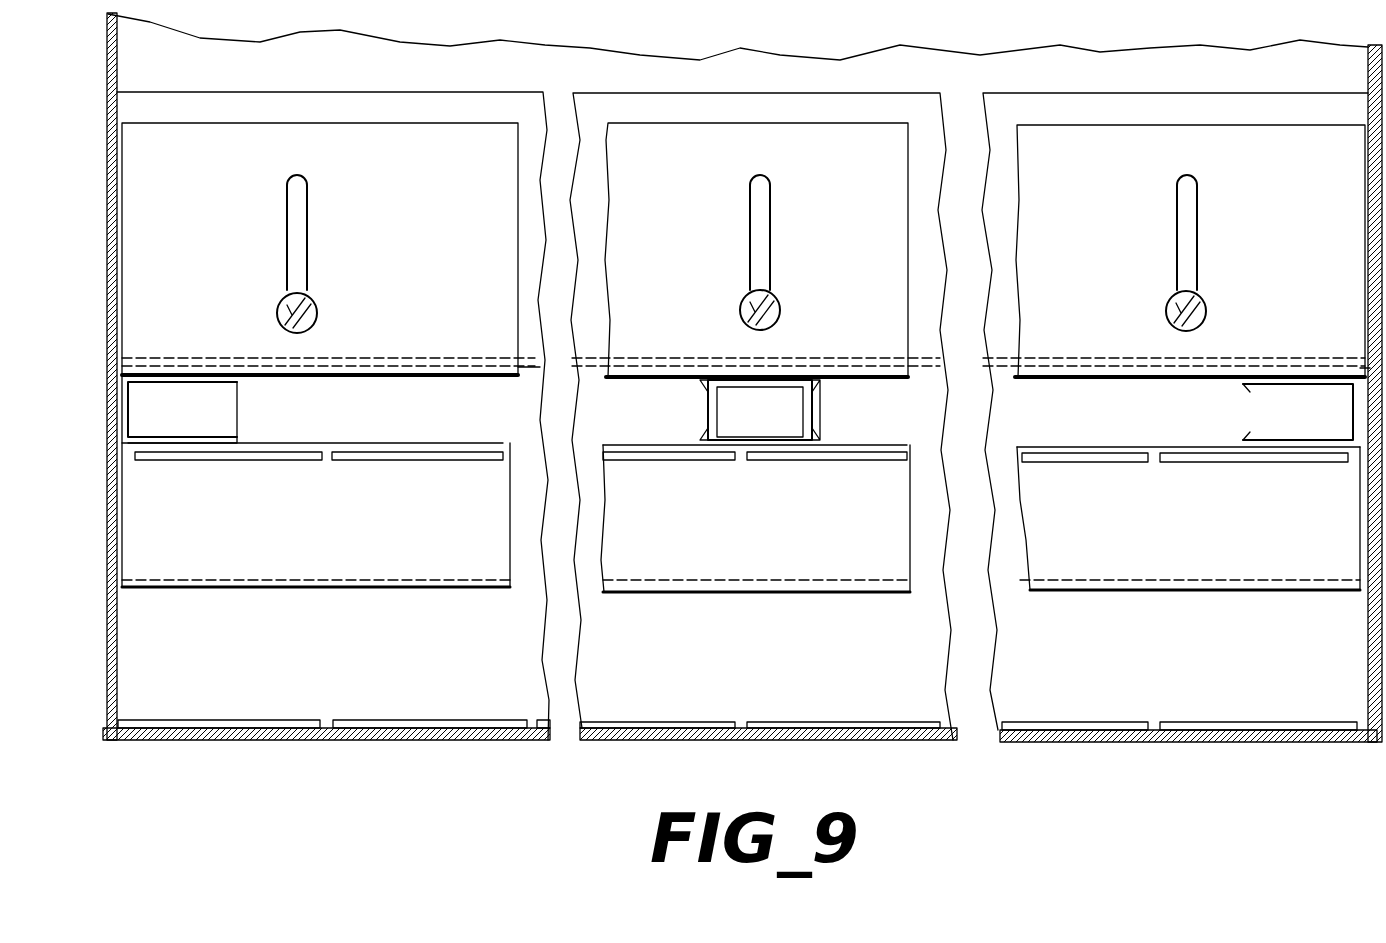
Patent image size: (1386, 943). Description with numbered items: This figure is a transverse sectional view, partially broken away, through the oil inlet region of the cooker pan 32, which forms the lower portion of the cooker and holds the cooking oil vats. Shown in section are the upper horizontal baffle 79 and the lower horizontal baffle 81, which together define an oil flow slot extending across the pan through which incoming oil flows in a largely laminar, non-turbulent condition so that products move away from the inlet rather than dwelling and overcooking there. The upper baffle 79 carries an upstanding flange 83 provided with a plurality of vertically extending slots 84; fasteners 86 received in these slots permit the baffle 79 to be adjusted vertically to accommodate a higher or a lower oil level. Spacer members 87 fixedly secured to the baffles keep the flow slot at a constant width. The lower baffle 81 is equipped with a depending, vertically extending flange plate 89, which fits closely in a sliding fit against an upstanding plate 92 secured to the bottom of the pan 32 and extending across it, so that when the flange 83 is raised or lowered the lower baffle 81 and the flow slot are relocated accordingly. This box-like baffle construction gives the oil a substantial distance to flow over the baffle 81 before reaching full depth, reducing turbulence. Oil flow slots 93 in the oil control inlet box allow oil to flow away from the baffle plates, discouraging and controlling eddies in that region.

The pan 32 is at (107, 240).
The upper horizontal baffle 79 is at (1037, 353).
The lower horizontal baffle 81 is at (1205, 445).
The upstanding flange 83 is at (420, 246).
The vertically extending slots 84 is at (287, 212).
The fasteners 86 is at (278, 312).
The spacer members 87 is at (130, 433).
The vertically extending flange plate 89 is at (365, 546).
The upstanding plate 92 is at (293, 656).
The oil flow slots 93 is at (357, 457).